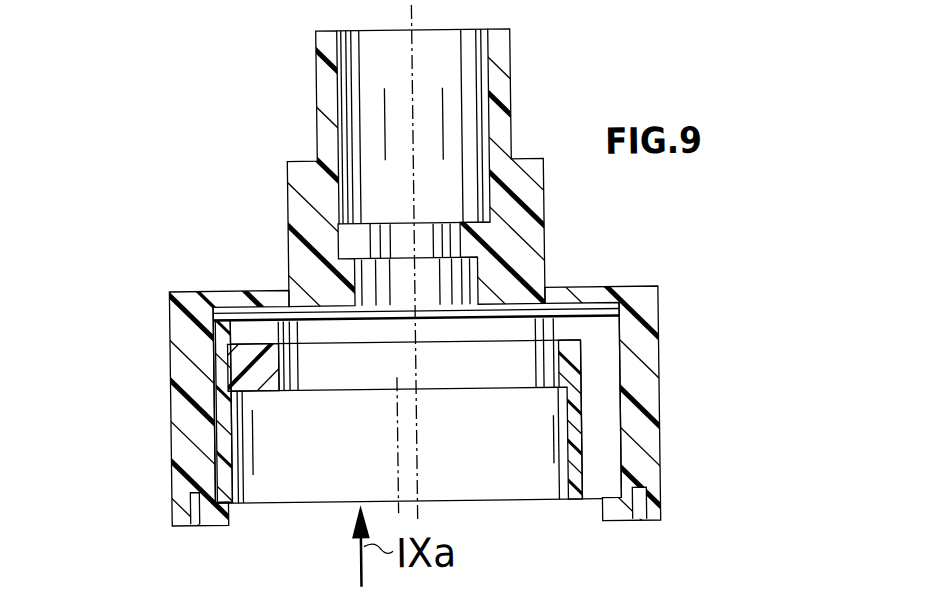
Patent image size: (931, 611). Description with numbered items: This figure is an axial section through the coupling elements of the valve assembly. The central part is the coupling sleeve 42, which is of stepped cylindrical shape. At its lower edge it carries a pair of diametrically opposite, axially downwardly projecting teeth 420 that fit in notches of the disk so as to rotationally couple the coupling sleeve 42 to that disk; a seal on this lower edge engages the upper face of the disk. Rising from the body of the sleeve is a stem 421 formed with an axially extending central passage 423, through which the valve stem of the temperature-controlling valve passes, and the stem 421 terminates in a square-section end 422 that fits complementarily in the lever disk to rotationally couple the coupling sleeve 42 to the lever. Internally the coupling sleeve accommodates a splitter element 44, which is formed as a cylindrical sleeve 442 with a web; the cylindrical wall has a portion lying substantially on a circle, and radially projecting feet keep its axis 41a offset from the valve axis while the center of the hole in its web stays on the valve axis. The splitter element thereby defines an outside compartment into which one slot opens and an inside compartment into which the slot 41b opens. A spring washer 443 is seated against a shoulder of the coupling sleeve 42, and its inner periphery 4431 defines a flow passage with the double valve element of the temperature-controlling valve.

The coupling sleeve 42 is at (642, 346).
The stem 421 is at (298, 188).
The square-section end 422 is at (325, 88).
The central passage 423 is at (381, 247).
The spring washer 443 is at (605, 305).
The inner periphery 4431 is at (292, 315).
The splitter element 44 is at (582, 367).
The cylindrical sleeve 442 is at (578, 455).
The axis 41a is at (607, 422).
The slot 41b is at (186, 409).
The teeth 420 is at (183, 515).